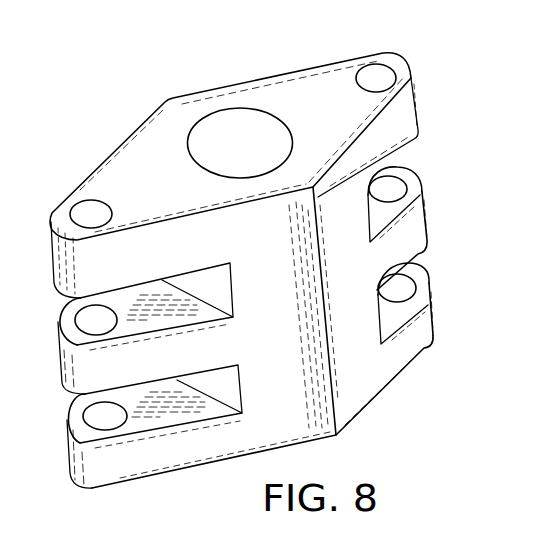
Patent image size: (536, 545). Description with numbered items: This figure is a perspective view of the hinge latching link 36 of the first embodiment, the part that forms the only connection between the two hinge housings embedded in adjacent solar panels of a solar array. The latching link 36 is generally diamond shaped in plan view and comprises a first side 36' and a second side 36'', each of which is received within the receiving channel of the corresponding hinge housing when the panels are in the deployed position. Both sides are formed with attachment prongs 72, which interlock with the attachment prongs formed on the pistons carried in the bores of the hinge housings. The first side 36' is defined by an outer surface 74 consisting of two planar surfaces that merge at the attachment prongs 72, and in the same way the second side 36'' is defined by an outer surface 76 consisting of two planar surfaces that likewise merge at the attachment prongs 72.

The latching link 36 is at (234, 153).
The first side 36' is at (349, 91).
The second side 36'' is at (121, 194).
The attachment prongs 72 is at (427, 199).
The outer surface 74 is at (370, 375).
The outer surface 76 is at (295, 428).